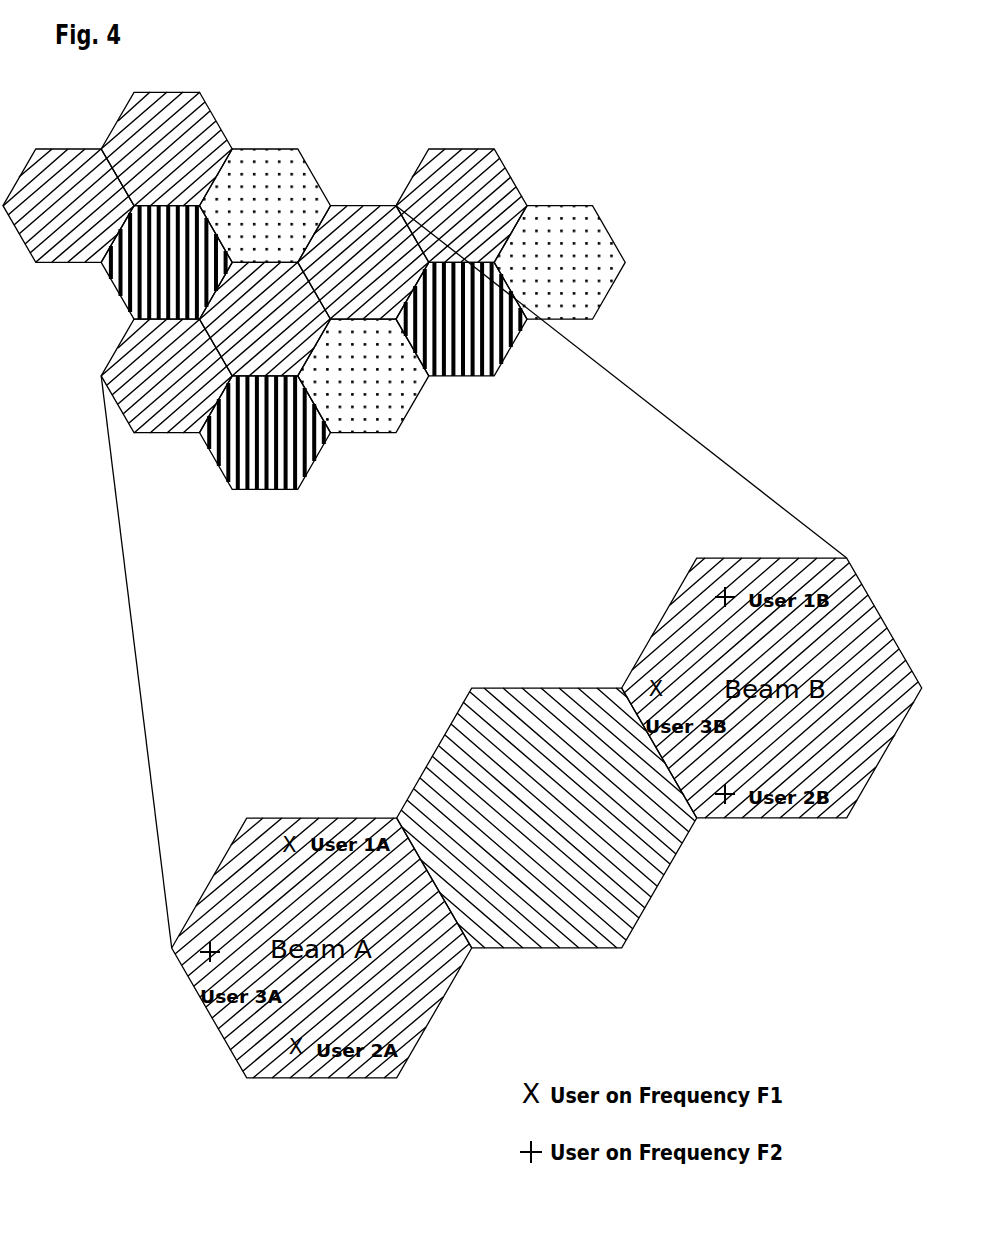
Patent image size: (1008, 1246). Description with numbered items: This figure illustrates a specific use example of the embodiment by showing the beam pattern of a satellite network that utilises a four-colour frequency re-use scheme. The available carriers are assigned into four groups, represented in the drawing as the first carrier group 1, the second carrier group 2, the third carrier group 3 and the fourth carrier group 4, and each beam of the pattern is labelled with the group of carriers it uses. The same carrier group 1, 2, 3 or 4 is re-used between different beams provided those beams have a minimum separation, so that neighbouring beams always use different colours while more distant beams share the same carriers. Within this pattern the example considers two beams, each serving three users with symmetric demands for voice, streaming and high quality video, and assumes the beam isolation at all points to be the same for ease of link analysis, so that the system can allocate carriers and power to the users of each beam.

The first carrier group 1 is at (216, 291).
The second carrier group 2 is at (399, 520).
The third carrier group 3 is at (413, 291).
The fourth carrier group 4 is at (314, 348).